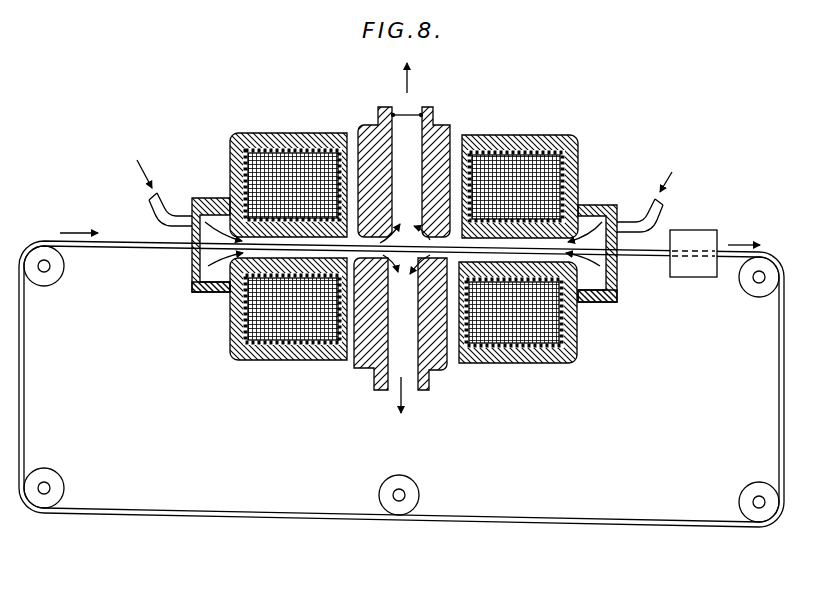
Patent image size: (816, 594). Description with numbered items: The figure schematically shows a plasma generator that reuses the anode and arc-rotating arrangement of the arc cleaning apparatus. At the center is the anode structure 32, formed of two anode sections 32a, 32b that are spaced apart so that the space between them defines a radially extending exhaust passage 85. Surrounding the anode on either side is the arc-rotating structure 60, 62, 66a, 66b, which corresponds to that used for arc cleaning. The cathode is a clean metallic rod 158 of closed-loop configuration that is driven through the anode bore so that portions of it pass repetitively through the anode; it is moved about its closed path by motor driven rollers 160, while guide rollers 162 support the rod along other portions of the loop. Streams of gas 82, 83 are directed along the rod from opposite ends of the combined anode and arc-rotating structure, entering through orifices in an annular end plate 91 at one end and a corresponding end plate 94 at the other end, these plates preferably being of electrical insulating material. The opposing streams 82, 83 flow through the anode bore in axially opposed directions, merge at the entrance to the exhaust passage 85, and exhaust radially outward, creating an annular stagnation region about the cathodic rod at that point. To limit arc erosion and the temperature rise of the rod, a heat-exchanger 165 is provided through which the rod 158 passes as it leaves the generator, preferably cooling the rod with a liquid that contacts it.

The anode structure 32 is at (406, 237).
The anode section 32a is at (366, 135).
The anode section 32b is at (452, 134).
The arc-rotating structure 60 is at (292, 160).
The arc-rotating structure 62 is at (519, 160).
The arc-rotating structure 66a is at (277, 235).
The arc-rotating structure 66b is at (528, 239).
The gas stream 82 is at (204, 214).
The gas stream 83 is at (605, 211).
The exhaust passage 85 is at (405, 238).
The annular end plate 91 is at (192, 291).
The end plate 94 is at (617, 300).
The metallic rod 158 is at (142, 250).
The motor driven rollers 160 is at (57, 481).
The guide rollers 162 is at (51, 279).
The heat-exchanger 165 is at (693, 232).